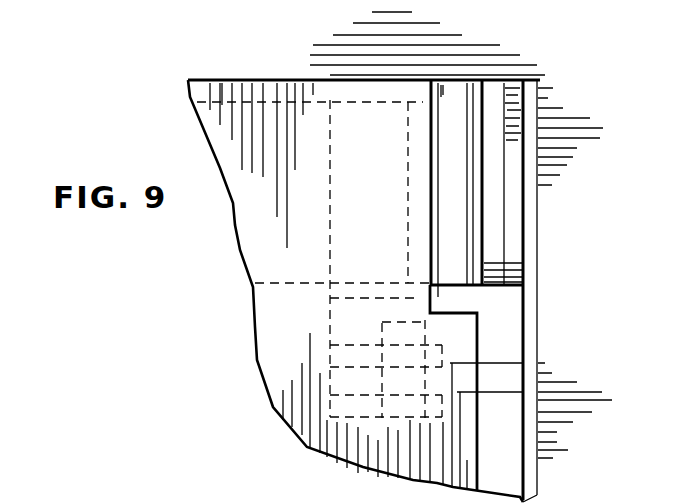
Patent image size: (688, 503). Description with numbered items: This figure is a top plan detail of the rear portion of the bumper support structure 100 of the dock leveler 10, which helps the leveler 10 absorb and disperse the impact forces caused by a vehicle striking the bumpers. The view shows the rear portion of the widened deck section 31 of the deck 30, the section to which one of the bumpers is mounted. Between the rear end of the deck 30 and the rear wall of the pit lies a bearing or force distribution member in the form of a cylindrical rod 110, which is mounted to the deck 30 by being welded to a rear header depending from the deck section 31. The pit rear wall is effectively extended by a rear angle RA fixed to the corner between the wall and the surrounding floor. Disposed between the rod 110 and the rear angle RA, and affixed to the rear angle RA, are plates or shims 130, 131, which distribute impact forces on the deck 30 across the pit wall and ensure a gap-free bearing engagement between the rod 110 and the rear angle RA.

The deck 30 is at (233, 168).
The widened deck section 31 is at (362, 82).
The bumper support structure 100 is at (513, 63).
The cylindrical rod 110 is at (460, 98).
The plate 130 is at (510, 207).
The plate 131 is at (488, 110).
The rear angle RA is at (530, 243).
The leveler 10 is at (278, 289).